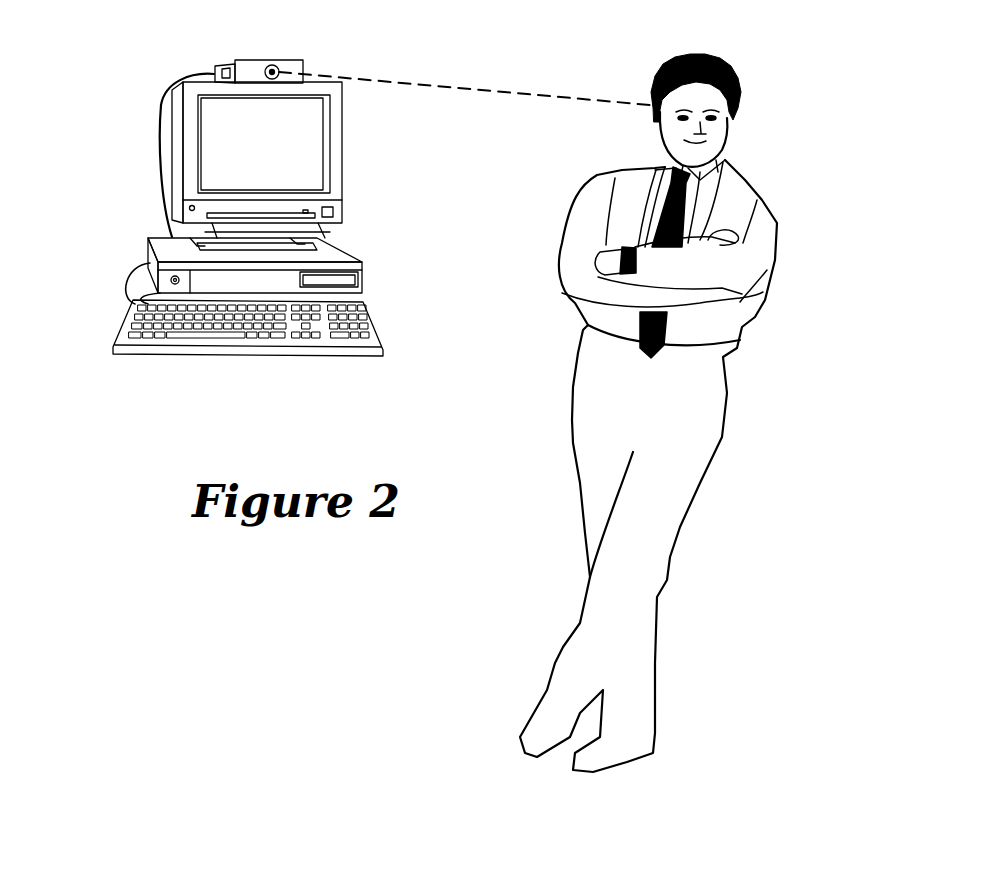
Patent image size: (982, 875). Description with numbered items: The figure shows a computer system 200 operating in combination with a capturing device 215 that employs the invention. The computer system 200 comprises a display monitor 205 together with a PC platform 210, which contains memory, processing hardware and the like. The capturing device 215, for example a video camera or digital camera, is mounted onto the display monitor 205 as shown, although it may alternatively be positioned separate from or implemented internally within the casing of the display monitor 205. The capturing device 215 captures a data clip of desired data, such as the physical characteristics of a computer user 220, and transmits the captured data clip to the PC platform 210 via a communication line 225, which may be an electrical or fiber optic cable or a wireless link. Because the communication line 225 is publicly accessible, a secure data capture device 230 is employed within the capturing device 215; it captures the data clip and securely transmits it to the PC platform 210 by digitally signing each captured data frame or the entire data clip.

The computer system 200 is at (112, 68).
The display monitor 205 is at (342, 127).
The PC platform 210 is at (362, 273).
The capturing device 215 is at (300, 60).
The computer user 220 is at (777, 404).
The communication line 225 is at (160, 172).
The secure data capture device 230 is at (228, 62).